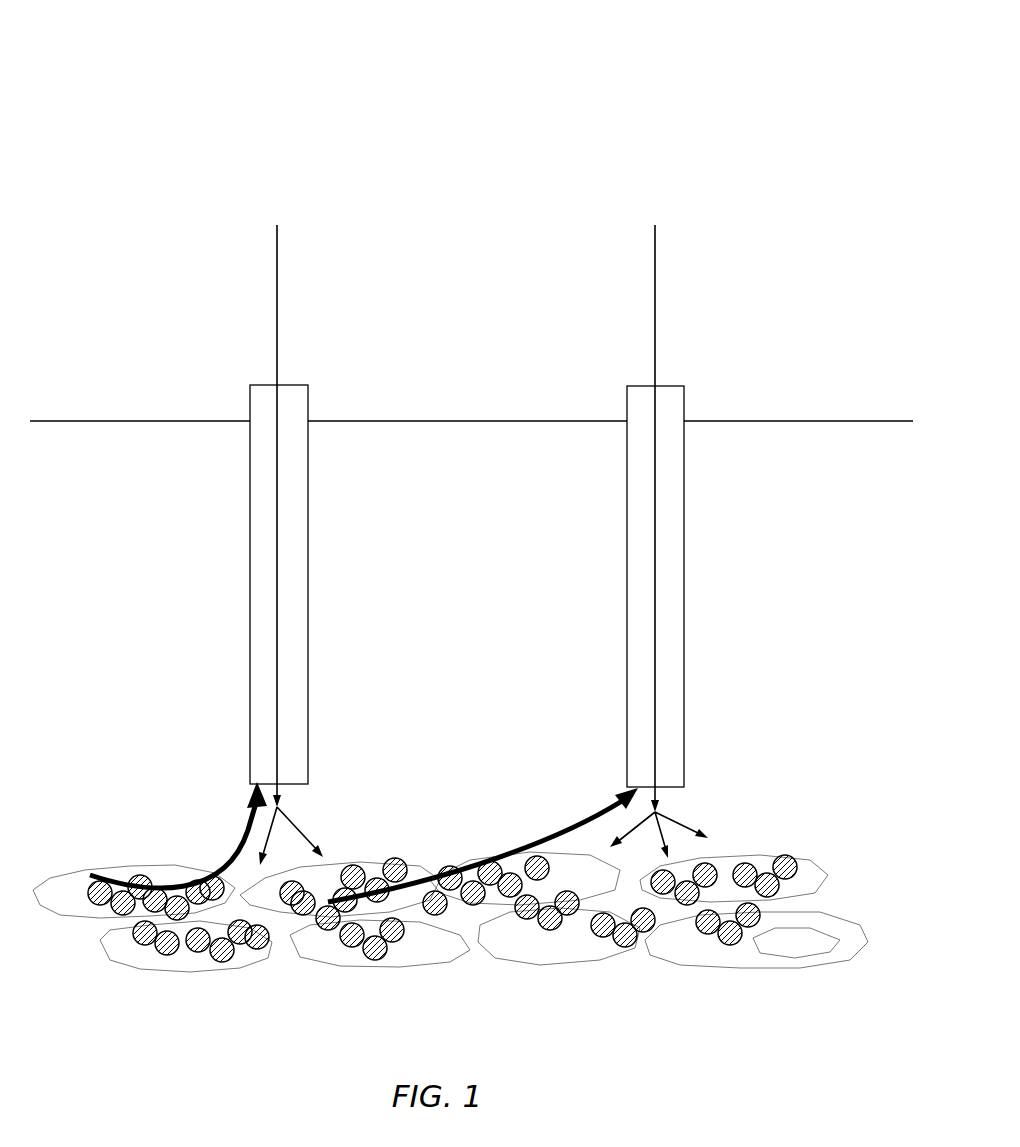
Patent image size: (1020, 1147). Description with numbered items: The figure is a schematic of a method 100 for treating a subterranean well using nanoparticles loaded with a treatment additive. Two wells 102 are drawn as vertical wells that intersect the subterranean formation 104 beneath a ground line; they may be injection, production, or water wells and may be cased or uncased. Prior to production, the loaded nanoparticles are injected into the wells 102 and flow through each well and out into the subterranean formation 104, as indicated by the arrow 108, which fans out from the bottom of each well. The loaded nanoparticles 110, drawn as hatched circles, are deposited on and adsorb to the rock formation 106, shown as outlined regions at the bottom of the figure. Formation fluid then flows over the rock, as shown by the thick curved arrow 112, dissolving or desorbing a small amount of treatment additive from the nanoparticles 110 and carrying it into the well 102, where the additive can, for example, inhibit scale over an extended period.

The method 100 is at (156, 84).
The well 102 is at (250, 413).
The subterranean formation 104 is at (72, 505).
The rock formation 106 is at (147, 957).
The arrow 108 is at (278, 325).
The loaded nanoparticles 110 is at (353, 940).
The arrow 112 is at (248, 840).